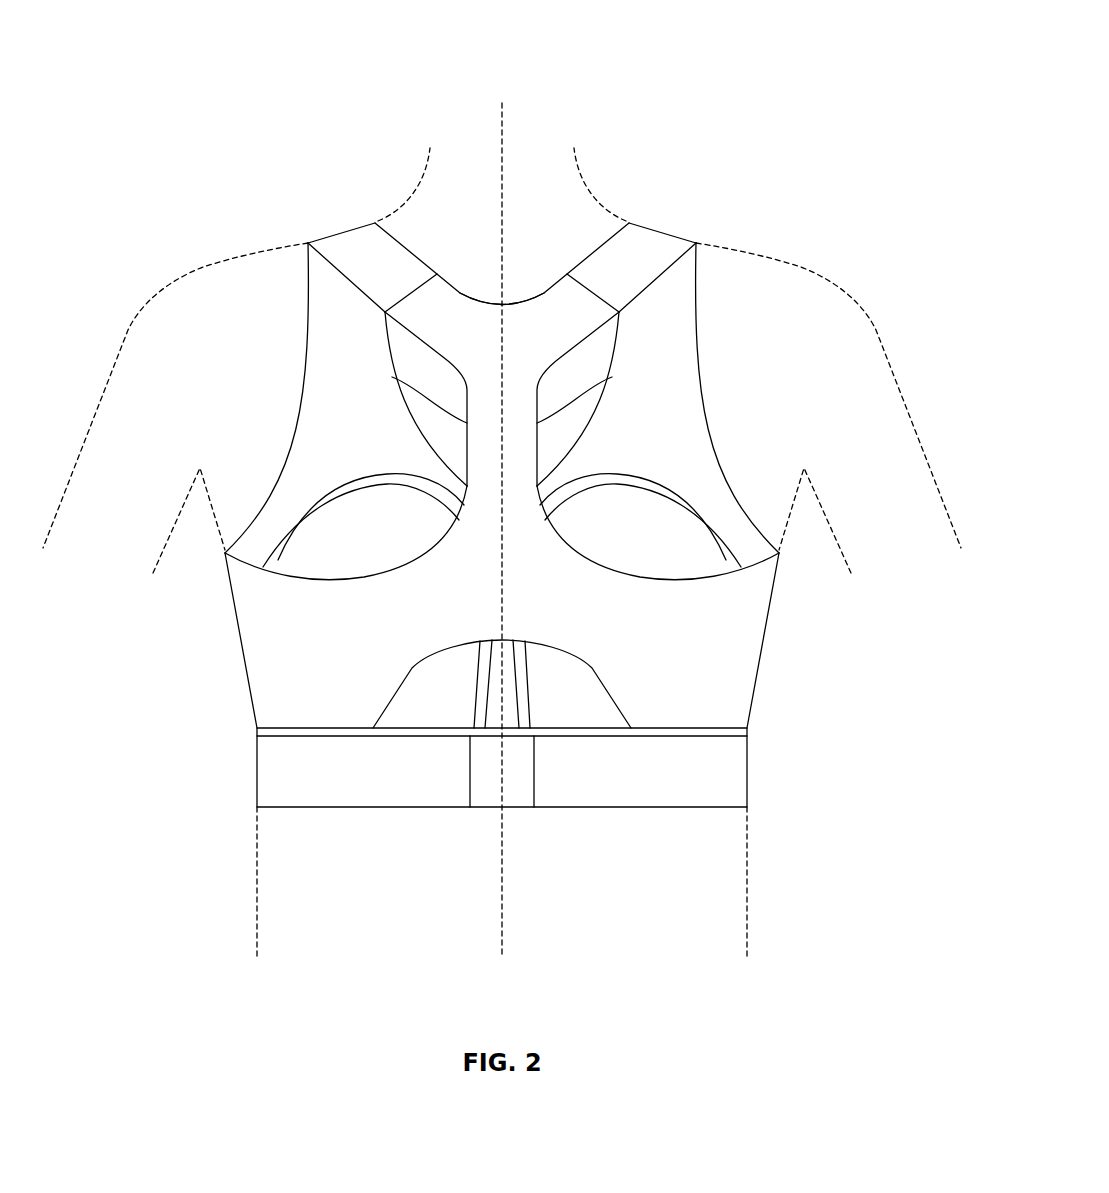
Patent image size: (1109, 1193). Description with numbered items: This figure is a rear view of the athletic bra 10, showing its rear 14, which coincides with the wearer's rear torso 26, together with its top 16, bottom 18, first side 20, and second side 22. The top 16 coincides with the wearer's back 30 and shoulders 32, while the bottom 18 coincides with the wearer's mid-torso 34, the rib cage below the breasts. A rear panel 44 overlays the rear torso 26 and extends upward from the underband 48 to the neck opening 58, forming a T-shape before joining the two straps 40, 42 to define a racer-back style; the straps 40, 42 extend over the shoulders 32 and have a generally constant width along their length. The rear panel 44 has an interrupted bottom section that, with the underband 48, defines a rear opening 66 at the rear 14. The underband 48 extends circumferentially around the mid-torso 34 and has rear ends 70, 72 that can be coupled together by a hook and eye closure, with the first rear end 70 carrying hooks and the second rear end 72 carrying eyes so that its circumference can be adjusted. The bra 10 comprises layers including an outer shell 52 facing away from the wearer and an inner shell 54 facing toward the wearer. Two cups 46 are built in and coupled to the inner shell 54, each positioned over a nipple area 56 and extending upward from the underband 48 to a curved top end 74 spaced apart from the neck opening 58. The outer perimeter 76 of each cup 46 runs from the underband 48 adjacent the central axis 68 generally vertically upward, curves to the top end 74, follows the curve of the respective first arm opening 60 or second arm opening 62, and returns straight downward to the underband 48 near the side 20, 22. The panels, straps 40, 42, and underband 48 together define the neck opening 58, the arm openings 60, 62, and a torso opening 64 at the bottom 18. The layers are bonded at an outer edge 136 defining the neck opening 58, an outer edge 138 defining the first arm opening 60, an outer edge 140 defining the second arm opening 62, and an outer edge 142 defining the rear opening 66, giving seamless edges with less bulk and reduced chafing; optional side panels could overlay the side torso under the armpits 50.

The athletic bra 10 is at (767, 50).
The rear 14 is at (735, 587).
The top 16 is at (522, 247).
The bottom 18 is at (578, 856).
The first side 20 is at (223, 648).
The second side 22 is at (778, 650).
The rear torso 26 is at (295, 836).
The back 30 is at (437, 243).
The shoulders 32 is at (208, 293).
The mid-torso 34 is at (326, 851).
The first strap 40 is at (335, 228).
The second strap 42 is at (665, 245).
The rear panel 44 is at (715, 702).
The cups 46 is at (328, 520).
The underband 48 is at (749, 800).
The armpits 50 is at (200, 520).
The outer shell 52 is at (643, 697).
The inner shell 54 is at (328, 323).
The nipple area 56 is at (295, 625).
The neck opening 58 is at (564, 243).
The first arm opening 60 is at (298, 333).
The second arm opening 62 is at (710, 355).
The torso opening 64 is at (421, 822).
The rear opening 66 is at (571, 685).
The central axis 68 is at (501, 147).
The first rear end 70 is at (485, 809).
The second rear end 72 is at (519, 809).
The curved top end 74 is at (382, 473).
The outer perimeter 76 is at (287, 542).
The outer edge 136 is at (542, 297).
The outer edge 138 is at (392, 377).
The outer edge 140 is at (612, 377).
The outer edge 142 is at (541, 640).